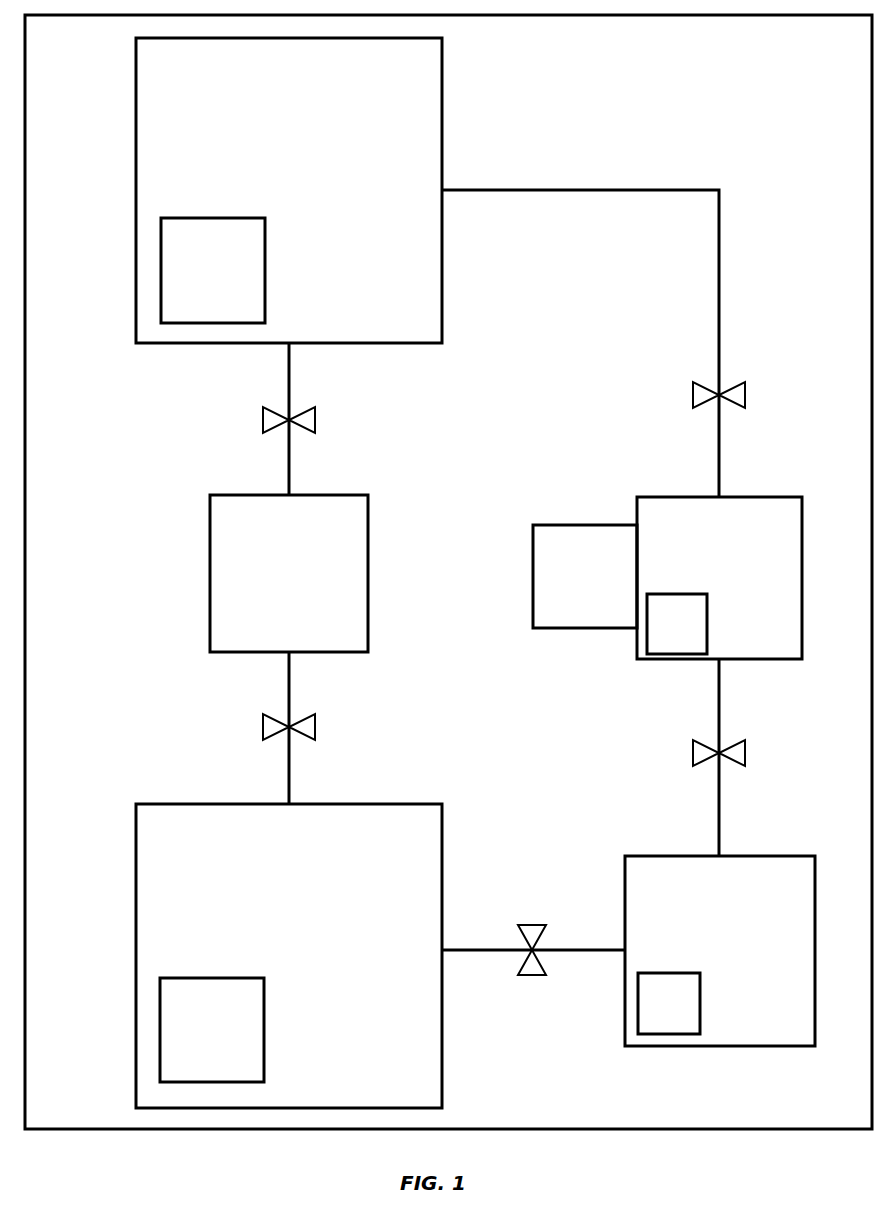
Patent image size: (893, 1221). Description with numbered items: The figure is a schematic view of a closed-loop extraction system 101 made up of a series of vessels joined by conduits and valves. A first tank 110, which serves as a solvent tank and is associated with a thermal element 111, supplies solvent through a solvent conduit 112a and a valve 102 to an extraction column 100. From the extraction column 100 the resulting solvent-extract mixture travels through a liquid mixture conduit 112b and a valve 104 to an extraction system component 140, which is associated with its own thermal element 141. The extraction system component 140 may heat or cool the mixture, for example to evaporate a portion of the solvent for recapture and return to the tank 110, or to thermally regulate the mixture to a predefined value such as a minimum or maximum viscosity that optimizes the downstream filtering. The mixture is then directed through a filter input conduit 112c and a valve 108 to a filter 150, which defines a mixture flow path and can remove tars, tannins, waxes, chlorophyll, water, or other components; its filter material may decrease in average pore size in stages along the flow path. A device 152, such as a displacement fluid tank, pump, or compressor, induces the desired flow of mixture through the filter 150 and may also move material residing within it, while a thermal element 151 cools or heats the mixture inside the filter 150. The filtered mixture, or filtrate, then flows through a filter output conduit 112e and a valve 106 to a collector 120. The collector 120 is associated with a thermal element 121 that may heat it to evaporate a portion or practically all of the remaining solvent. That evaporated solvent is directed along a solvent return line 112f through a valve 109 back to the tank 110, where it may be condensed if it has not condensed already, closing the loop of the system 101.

The extraction system 101 is at (783, 1099).
The extraction system component 140 is at (136, 189).
The thermal element 141 is at (193, 281).
The extraction column 100 is at (269, 584).
The first tank 110 is at (156, 828).
The thermal element 111 is at (192, 1041).
The filter 150 is at (699, 588).
The thermal element 151 is at (657, 636).
The device 152 is at (565, 588).
The collector 120 is at (700, 960).
The thermal element 121 is at (649, 1015).
The valve 102 is at (263, 727).
The valve 104 is at (263, 420).
The valve 106 is at (693, 750).
The valve 108 is at (693, 390).
The valve 109 is at (532, 923).
The solvent conduit 112a is at (289, 680).
The liquid mixture conduit 112b is at (289, 444).
The filter input conduit 112c is at (719, 221).
The filter output conduit 112e is at (719, 726).
The solvent return line 112f is at (603, 955).